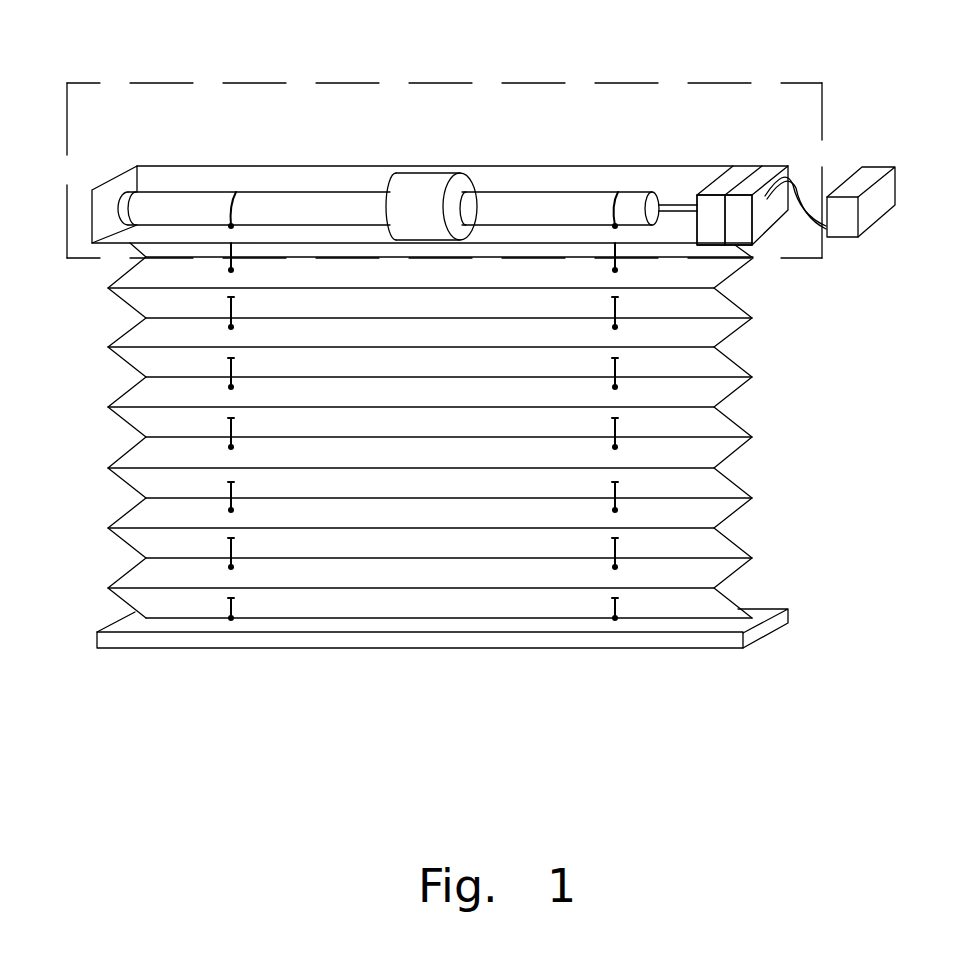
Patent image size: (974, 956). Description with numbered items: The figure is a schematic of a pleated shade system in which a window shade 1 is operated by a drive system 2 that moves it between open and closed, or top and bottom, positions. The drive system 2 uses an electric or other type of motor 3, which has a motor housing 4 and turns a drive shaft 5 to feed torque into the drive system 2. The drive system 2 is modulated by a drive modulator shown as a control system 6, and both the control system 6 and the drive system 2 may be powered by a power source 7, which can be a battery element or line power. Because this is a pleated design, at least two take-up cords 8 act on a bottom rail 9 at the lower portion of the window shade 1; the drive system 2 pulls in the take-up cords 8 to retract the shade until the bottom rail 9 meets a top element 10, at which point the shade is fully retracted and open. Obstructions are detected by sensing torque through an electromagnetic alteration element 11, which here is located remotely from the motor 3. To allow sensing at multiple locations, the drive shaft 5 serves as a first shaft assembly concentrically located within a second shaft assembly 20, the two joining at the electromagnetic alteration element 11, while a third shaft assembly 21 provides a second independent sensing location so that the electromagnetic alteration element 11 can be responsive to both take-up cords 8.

The window shade 1 is at (462, 563).
The drive system 2 is at (598, 83).
The motor 3 is at (745, 167).
The motor housing 4 is at (732, 180).
The drive shaft 5 is at (665, 203).
The control system 6 is at (763, 175).
The power source 7 is at (903, 208).
The take-up cords 8 is at (227, 368).
The bottom rail 9 is at (728, 642).
The top element 10 is at (650, 230).
The electromagnetic alteration element 11 is at (438, 190).
The second shaft assembly 20 is at (572, 200).
The third shaft assembly 21 is at (293, 208).